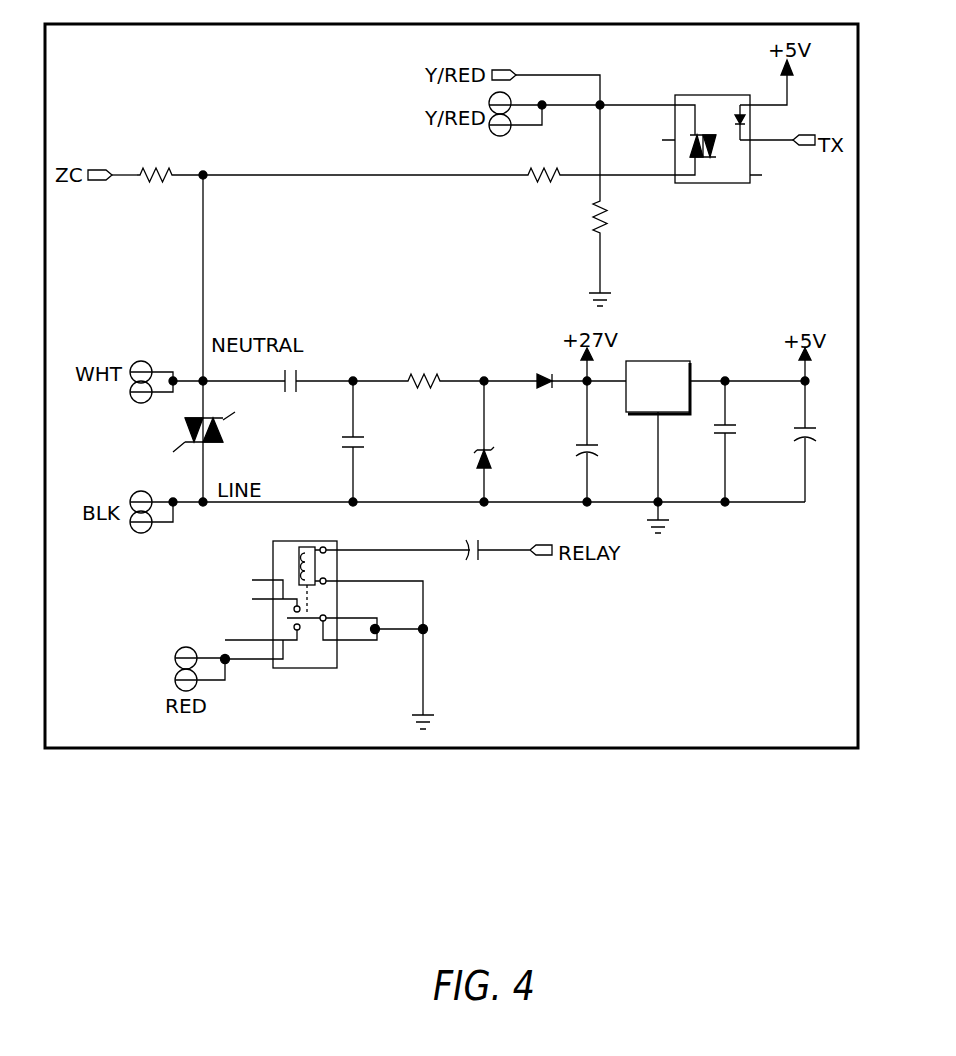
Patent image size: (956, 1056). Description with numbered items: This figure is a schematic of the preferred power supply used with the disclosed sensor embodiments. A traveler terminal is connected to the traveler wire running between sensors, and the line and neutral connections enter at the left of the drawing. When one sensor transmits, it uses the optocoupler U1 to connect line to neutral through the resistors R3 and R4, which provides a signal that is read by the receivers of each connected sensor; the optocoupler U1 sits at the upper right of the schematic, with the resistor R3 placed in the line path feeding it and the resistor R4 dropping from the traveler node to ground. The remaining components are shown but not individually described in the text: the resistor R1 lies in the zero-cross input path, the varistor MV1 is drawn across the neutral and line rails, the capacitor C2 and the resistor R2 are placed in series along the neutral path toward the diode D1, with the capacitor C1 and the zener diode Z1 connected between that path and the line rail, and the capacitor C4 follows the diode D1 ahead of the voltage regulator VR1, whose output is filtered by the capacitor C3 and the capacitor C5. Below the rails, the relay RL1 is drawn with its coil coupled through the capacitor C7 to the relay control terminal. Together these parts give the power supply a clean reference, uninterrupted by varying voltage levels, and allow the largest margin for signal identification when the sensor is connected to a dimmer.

The resistor R1 is at (156, 161).
The resistor R2 is at (424, 369).
The resistor R3 is at (544, 162).
The resistor R4 is at (616, 217).
The capacitor C1 is at (369, 441).
The capacitor C2 is at (290, 396).
The capacitor C3 is at (740, 441).
The capacitor C4 is at (604, 441).
The capacitor C5 is at (820, 441).
The capacitor C7 is at (475, 537).
The diode D1 is at (544, 369).
The zener diode Z1 is at (500, 441).
The metal oxide varistor MV1 is at (227, 441).
The optocoupler U1 is at (727, 136).
The voltage regulator VR1 is at (658, 433).
The relay RL1 is at (301, 591).